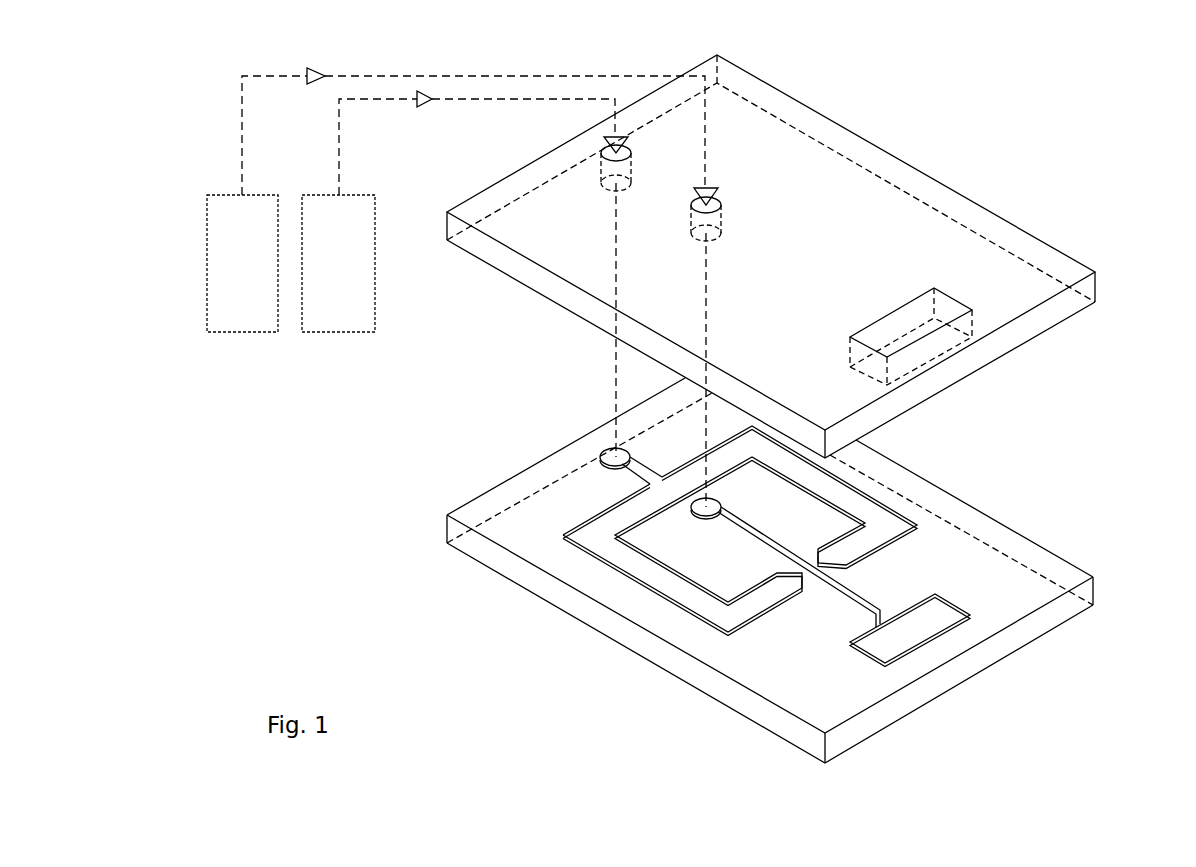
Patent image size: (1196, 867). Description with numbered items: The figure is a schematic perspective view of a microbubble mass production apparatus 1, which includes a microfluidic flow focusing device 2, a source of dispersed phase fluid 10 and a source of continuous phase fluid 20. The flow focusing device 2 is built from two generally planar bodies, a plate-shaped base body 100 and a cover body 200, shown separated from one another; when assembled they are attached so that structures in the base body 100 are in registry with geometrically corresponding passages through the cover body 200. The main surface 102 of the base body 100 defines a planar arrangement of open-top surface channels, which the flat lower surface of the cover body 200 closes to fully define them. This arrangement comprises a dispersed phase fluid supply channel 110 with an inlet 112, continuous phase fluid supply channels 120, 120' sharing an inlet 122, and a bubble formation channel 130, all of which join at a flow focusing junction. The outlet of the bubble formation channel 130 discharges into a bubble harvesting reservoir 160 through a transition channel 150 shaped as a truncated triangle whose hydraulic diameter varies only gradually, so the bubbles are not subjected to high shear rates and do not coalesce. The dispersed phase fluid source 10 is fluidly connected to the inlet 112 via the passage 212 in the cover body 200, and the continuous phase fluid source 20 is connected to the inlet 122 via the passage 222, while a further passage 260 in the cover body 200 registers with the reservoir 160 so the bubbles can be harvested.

The microbubble mass production apparatus 1 is at (350, 547).
The microfluidic flow focusing device 2 is at (1010, 147).
The source of dispersed phase fluid 10 is at (230, 257).
The source of continuous phase fluid 20 is at (326, 257).
The base body 100 is at (1067, 612).
The main surface 102 is at (988, 582).
The dispersed phase fluid supply channel 110 is at (752, 537).
The inlet 112 is at (703, 512).
The continuous phase fluid supply channel 120 is at (782, 531).
The continuous phase fluid supply channel 120' is at (646, 605).
The inlet 122 is at (612, 462).
The bubble formation channel 130 is at (843, 592).
The transition channel 150 is at (889, 617).
The bubble harvesting reservoir 160 is at (913, 628).
The cover body 200 is at (1067, 305).
The passage 212 is at (703, 208).
The passage 222 is at (612, 155).
The passage 260 is at (922, 328).